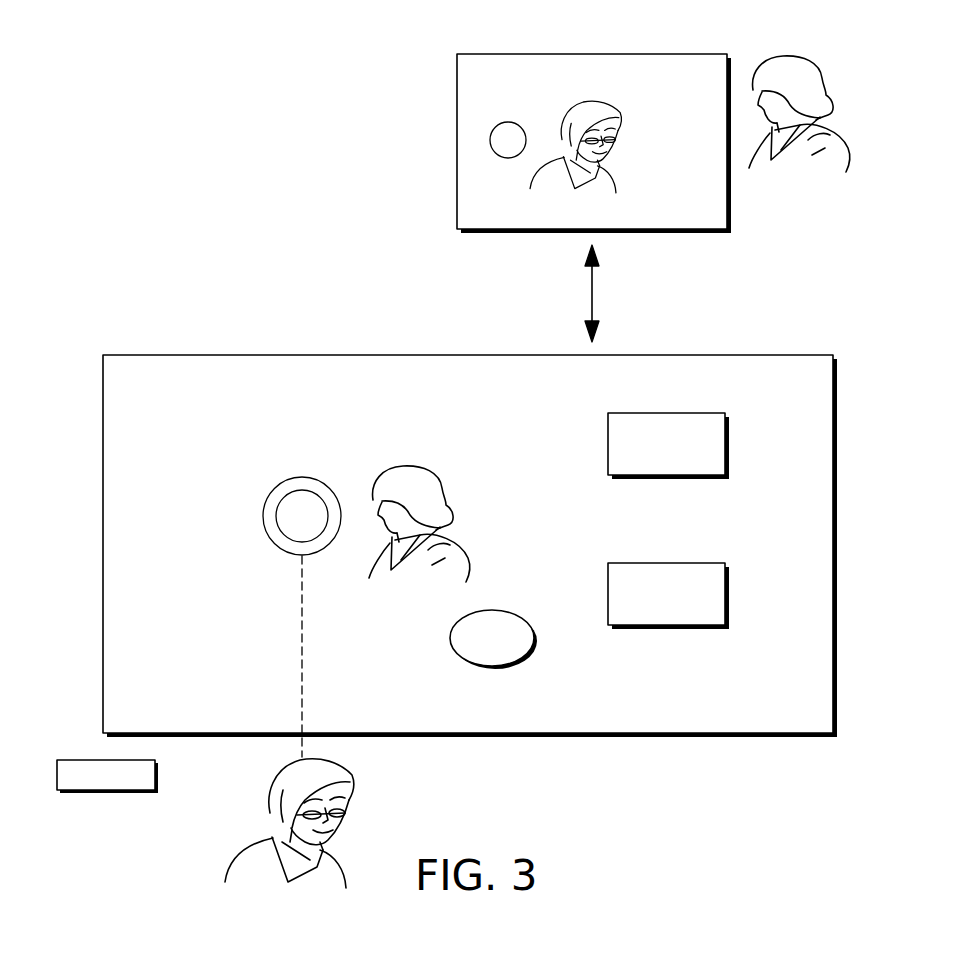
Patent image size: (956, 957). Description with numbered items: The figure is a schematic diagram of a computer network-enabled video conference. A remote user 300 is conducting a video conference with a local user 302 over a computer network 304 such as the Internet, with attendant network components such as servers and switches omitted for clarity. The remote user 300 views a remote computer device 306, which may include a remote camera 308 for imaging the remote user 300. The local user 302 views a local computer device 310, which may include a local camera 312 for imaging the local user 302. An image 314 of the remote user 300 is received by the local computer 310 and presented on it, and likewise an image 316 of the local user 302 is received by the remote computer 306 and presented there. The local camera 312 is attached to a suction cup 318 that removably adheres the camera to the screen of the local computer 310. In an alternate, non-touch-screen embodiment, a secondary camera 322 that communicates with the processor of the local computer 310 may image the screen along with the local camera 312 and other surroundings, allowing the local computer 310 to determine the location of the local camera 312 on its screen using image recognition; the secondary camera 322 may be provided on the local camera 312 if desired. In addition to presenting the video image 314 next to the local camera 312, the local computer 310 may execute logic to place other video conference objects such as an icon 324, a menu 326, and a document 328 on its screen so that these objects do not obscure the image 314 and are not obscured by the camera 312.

The remote user 300 is at (783, 57).
The local user 302 is at (224, 870).
The computer network 304 is at (593, 292).
The remote computer device 306 is at (592, 53).
The remote camera 308 is at (508, 122).
The local computer device 310 is at (103, 512).
The local camera 312 is at (284, 521).
The image of the remote user 314 is at (401, 467).
The image of the local user 316 is at (616, 187).
The suction cup 318 is at (302, 477).
The secondary camera 322 is at (108, 793).
The icon 324 is at (451, 637).
The menu 326 is at (608, 592).
The document 328 is at (608, 441).